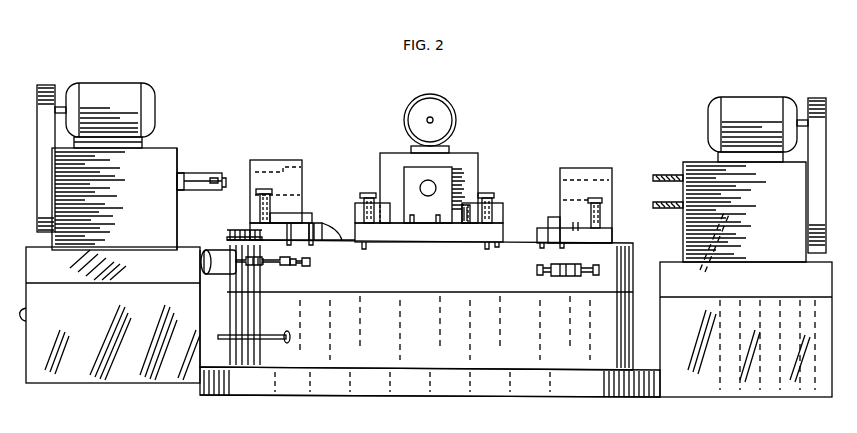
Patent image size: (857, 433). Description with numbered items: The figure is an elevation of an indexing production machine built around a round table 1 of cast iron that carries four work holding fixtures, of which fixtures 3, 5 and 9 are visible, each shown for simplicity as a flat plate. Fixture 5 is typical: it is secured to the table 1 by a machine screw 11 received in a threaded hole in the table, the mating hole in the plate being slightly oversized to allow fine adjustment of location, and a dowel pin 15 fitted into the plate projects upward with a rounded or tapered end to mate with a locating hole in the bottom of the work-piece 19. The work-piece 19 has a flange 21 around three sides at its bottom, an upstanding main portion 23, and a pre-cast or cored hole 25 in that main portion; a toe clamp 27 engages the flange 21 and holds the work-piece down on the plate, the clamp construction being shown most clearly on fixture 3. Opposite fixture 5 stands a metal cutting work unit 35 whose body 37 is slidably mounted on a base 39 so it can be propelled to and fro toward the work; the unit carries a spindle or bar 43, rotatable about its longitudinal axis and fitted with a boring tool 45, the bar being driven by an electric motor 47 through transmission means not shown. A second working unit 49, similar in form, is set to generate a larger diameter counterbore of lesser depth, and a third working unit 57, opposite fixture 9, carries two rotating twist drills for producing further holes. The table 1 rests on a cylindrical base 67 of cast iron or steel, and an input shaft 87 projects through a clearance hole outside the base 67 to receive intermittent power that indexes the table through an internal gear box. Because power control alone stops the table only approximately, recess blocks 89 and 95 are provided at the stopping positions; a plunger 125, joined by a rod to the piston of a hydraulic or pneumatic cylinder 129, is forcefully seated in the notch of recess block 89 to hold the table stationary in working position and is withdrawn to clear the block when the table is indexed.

The round table 1 is at (636, 262).
The work holding fixture 3 is at (504, 240).
The work holding fixture 5 is at (338, 249).
The work holding fixture 9 is at (612, 238).
The machine screw 11 is at (318, 226).
The dowel pin 15 is at (248, 226).
The work-piece 19 is at (273, 158).
The flange 21 is at (305, 213).
The upstanding main portion 23 is at (251, 165).
The cored hole 25 is at (288, 160).
The toe clamp 27 is at (256, 205).
The metal cutting work unit 35 is at (153, 145).
The body 37 is at (180, 160).
The base 39 is at (28, 310).
The spindle or bar 43 is at (190, 172).
The boring tool 45 is at (217, 172).
The electric motor 47 is at (105, 98).
The working unit 49 is at (455, 148).
The third working unit 57 is at (698, 142).
The cylindrical base 67 is at (522, 356).
The input shaft 87 is at (282, 344).
The recess block 89 is at (295, 268).
The recess block 95 is at (577, 278).
The plunger 125 is at (267, 262).
The cylinder 129 is at (204, 260).